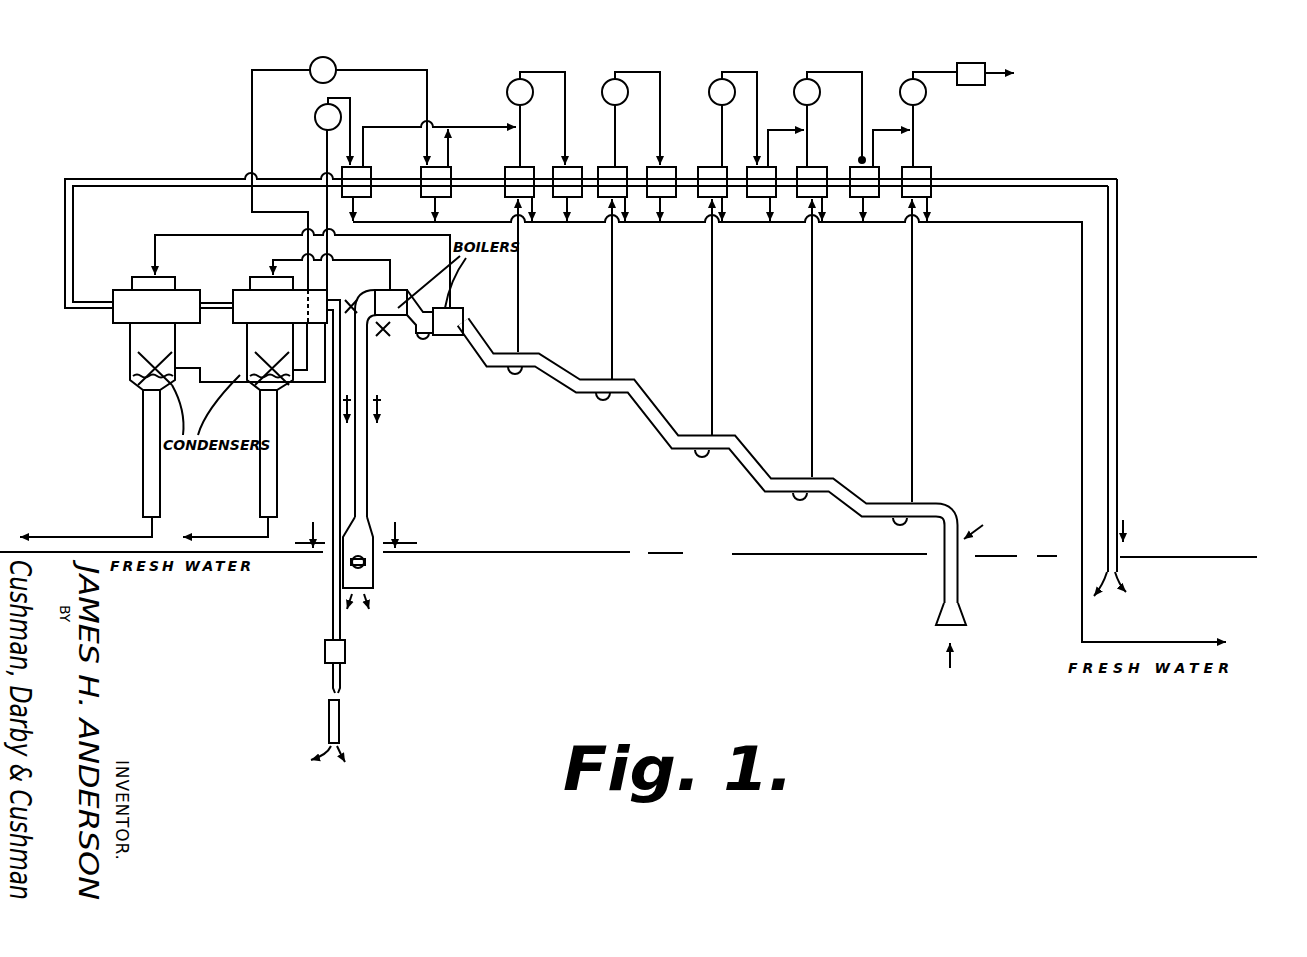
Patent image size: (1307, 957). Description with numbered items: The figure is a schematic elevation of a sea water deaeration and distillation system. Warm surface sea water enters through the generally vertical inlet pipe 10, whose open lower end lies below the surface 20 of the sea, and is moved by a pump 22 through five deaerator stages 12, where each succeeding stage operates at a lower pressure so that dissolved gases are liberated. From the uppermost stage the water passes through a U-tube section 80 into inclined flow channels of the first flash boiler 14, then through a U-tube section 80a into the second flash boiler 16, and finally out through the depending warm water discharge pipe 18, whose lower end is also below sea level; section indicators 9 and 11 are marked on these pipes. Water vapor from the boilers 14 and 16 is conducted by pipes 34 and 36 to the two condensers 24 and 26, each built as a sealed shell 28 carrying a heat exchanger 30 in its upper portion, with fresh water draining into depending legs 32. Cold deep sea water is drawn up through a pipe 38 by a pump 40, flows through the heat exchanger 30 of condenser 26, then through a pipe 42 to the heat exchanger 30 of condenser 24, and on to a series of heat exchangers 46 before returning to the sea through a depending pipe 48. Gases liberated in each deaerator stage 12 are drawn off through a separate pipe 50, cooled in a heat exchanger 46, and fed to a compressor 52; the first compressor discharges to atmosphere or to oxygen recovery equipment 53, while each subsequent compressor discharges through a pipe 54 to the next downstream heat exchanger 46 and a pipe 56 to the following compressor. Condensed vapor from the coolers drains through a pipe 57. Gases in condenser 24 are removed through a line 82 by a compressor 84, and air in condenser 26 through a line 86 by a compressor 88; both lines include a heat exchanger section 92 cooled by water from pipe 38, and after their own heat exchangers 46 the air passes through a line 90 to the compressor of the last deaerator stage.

The section line 9- 9 is at (352, 305).
The inlet pipe 10 is at (665, 467).
The section line 11- 11 is at (358, 535).
The deaerator stages 12 is at (538, 349).
The first flash boiler 14 is at (121, 178).
The second flash boiler 16 is at (425, 262).
The warm water discharge pipe 18 is at (370, 476).
The surface of the sea 20 is at (617, 552).
The pump 22 is at (368, 575).
The condenser 24 is at (125, 345).
The condenser 26 is at (239, 352).
The sealed shell 28 is at (127, 368).
The heat exchanger 30 is at (168, 317).
The depending legs 32 is at (148, 480).
The pipe 34 is at (210, 236).
The pipe 36 is at (276, 260).
The pipe 38 is at (340, 722).
The pump 40 is at (346, 650).
The pipe 42 is at (216, 303).
The heat exchangers 46 is at (636, 194).
The depending pipe 48 is at (1120, 395).
The pipe 50 is at (522, 265).
The compressor 52 is at (522, 80).
The equipment for separating and recovering oxygen 53 is at (977, 68).
The pipe 54 is at (566, 70).
The pipe 56 is at (781, 128).
The pipe 57 is at (1080, 402).
The U-tube section 80 is at (492, 378).
The U-tube section 80a is at (425, 350).
The line 82 is at (326, 205).
The compressor 84 is at (316, 110).
The line 86 is at (251, 114).
The compressor 88 is at (338, 67).
The line 90 is at (493, 92).
The heat exchanger section 92 is at (334, 291).